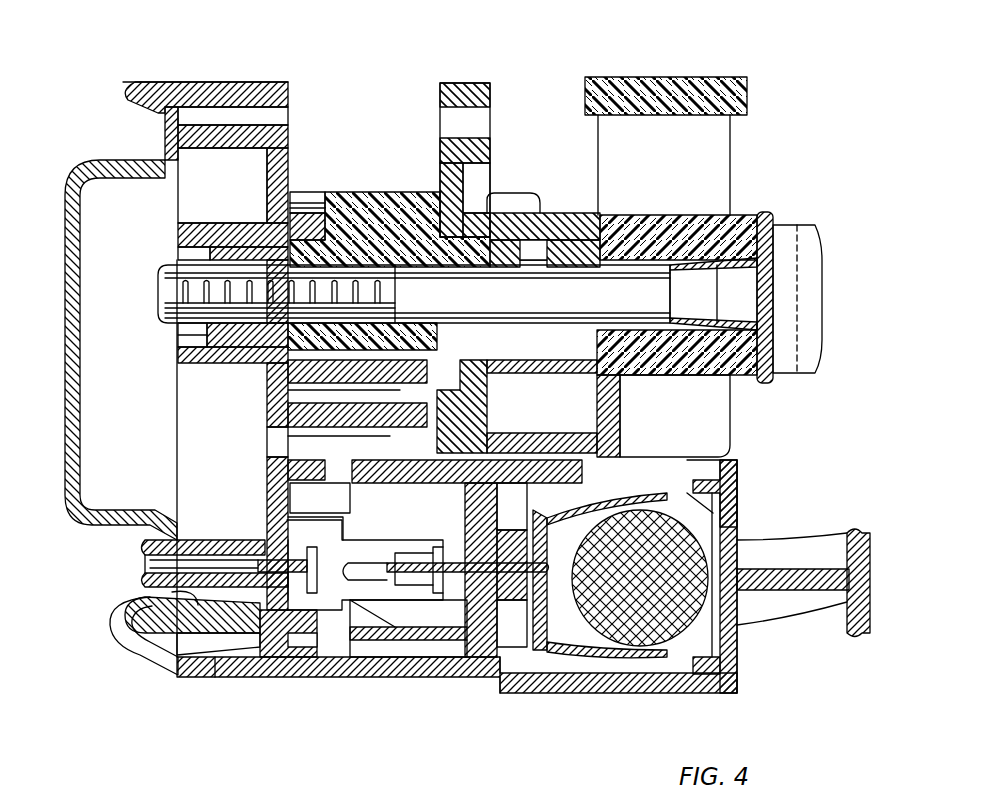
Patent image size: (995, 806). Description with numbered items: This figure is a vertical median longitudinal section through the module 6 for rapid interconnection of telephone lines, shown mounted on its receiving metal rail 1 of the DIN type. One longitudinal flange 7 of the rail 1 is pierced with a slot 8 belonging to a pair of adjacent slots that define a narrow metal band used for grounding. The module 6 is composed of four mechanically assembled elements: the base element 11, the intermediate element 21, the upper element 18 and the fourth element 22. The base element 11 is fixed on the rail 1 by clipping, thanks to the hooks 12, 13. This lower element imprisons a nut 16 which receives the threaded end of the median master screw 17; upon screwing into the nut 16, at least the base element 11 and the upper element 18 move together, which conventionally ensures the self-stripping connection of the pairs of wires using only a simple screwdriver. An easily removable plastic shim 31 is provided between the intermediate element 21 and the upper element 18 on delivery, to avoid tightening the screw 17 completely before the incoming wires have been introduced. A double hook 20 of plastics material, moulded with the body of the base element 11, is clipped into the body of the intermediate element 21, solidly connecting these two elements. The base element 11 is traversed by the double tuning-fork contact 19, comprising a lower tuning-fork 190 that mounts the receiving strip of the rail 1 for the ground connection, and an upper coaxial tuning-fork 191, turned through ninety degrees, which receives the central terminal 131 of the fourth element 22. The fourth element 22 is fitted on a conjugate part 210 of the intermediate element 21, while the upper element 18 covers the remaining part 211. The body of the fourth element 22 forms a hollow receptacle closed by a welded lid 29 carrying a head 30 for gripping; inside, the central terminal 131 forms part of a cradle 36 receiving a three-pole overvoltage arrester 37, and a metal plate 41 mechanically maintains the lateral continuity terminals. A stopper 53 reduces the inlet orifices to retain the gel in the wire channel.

The metal rail 1 is at (70, 196).
The module 6 is at (803, 102).
The longitudinal flange 7 is at (205, 660).
The slot 8 is at (155, 537).
The base element 11 is at (233, 72).
The hook 12 is at (168, 84).
The hook 13 is at (140, 605).
The nut 16 is at (178, 340).
The median master screw 17 is at (178, 298).
The upper element 18 is at (745, 222).
The double tuning-fork contact 19 is at (298, 532).
The double hook 20 is at (440, 400).
The intermediate element 21 is at (360, 205).
The fourth element 22 is at (583, 694).
The welded lid 29 is at (737, 678).
The head 30 is at (855, 633).
The plastic shim 31 is at (462, 84).
The cradle 36 is at (565, 652).
The three-pole overvoltage arrester 37 is at (672, 540).
The metal plate 41 is at (737, 487).
The stopper 53 is at (712, 82).
The central terminal 131 is at (388, 580).
The lower tuning-fork 190 is at (237, 563).
The upper tuning-fork 191 is at (428, 588).
The conjugate part 210 is at (398, 617).
The remaining part 211 is at (507, 242).